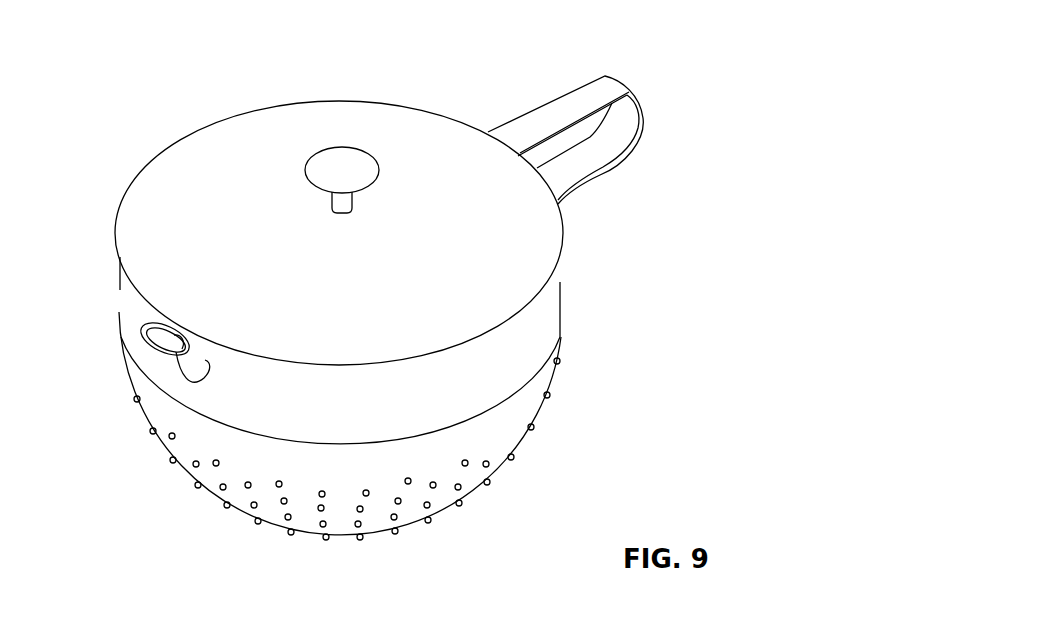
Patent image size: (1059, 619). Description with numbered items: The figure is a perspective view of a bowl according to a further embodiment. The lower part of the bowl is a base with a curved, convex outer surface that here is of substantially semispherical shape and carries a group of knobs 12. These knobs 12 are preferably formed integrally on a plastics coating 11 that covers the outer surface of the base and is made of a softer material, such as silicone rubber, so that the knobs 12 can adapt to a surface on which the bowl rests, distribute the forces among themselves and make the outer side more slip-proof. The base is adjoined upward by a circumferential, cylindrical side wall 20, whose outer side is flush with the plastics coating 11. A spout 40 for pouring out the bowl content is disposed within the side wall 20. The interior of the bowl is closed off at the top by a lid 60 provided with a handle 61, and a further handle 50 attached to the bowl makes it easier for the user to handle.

The plastics coating 11 is at (528, 393).
The knobs 12 is at (430, 500).
The side wall 20 is at (535, 328).
The spout 40 is at (188, 363).
The handle 50 is at (582, 90).
The lid 60 is at (188, 197).
The handle 61 is at (333, 162).